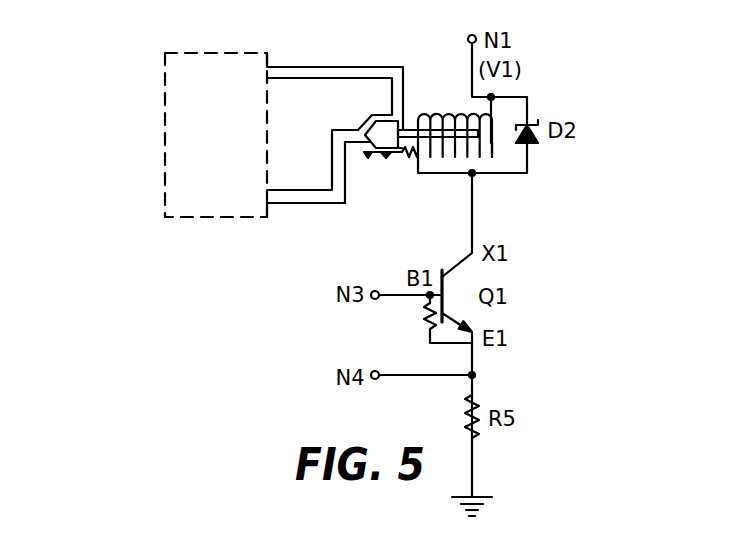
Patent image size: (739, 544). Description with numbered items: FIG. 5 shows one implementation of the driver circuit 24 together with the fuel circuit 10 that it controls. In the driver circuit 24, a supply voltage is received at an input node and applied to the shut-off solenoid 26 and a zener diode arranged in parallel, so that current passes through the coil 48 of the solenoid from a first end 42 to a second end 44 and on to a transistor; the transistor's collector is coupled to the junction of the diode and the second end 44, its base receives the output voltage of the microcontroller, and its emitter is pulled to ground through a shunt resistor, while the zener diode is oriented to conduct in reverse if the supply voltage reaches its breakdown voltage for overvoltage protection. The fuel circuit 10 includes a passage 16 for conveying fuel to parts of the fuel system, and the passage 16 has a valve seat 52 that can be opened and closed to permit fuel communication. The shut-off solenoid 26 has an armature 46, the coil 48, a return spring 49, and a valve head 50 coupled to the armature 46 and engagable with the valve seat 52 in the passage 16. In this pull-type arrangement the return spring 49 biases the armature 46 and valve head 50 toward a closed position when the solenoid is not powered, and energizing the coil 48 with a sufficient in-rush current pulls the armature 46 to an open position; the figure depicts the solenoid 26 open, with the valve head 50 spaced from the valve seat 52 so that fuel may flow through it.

The fuel circuit 10 is at (193, 53).
The passage 16 is at (328, 67).
The driver circuit 24 is at (125, 158).
The shut-off solenoid 26 is at (493, 122).
The first end 42 is at (408, 160).
The second end 44 is at (493, 143).
The armature 46 is at (412, 128).
The coil 48 is at (446, 113).
The return spring 49 is at (405, 153).
The valve head 50 is at (383, 153).
The valve seat 52 is at (372, 152).